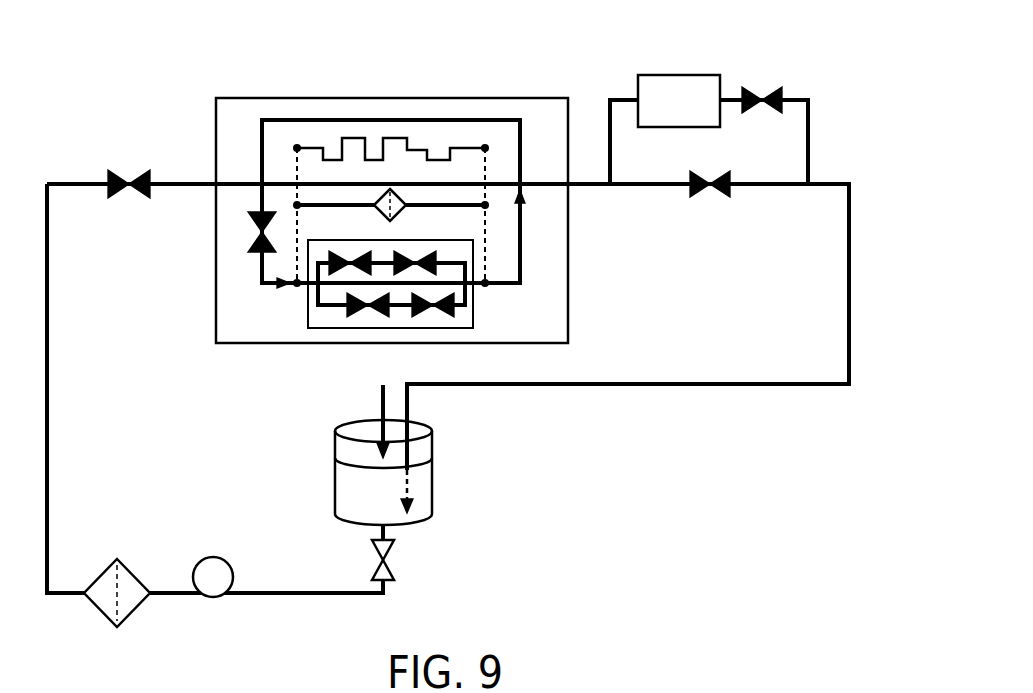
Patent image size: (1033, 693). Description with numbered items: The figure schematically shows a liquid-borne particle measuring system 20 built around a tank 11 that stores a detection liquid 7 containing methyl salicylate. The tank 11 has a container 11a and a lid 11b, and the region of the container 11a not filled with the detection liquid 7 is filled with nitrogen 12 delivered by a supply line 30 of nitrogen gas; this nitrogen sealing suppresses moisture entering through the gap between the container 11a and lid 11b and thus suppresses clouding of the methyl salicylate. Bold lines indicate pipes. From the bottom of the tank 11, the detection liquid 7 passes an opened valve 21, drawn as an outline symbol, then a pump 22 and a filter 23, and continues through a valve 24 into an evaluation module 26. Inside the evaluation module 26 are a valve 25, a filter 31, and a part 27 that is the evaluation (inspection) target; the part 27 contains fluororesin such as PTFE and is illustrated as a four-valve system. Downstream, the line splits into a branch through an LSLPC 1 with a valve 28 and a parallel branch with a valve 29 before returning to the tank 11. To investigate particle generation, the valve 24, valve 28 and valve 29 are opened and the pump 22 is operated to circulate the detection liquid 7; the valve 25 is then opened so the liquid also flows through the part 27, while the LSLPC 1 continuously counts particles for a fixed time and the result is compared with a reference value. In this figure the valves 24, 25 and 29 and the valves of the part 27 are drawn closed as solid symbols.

The LSLPC 1 is at (703, 75).
The liquid-borne particle measuring system 20 is at (562, 52).
The evaluation module 26 is at (365, 98).
The filter 31 is at (402, 194).
The valve 25 is at (256, 252).
The part 27 is at (308, 316).
The valve 24 is at (132, 198).
The valve 28 is at (764, 113).
The valve 29 is at (711, 198).
The supply line of nitrogen gas 30 is at (378, 400).
The nitrogen 12 is at (345, 452).
The detection liquid 7 is at (345, 490).
The tank 11 is at (508, 435).
The container 11a is at (437, 486).
The lid 11b is at (437, 448).
The valve 21 is at (394, 564).
The pump 22 is at (232, 563).
The filter 23 is at (134, 576).